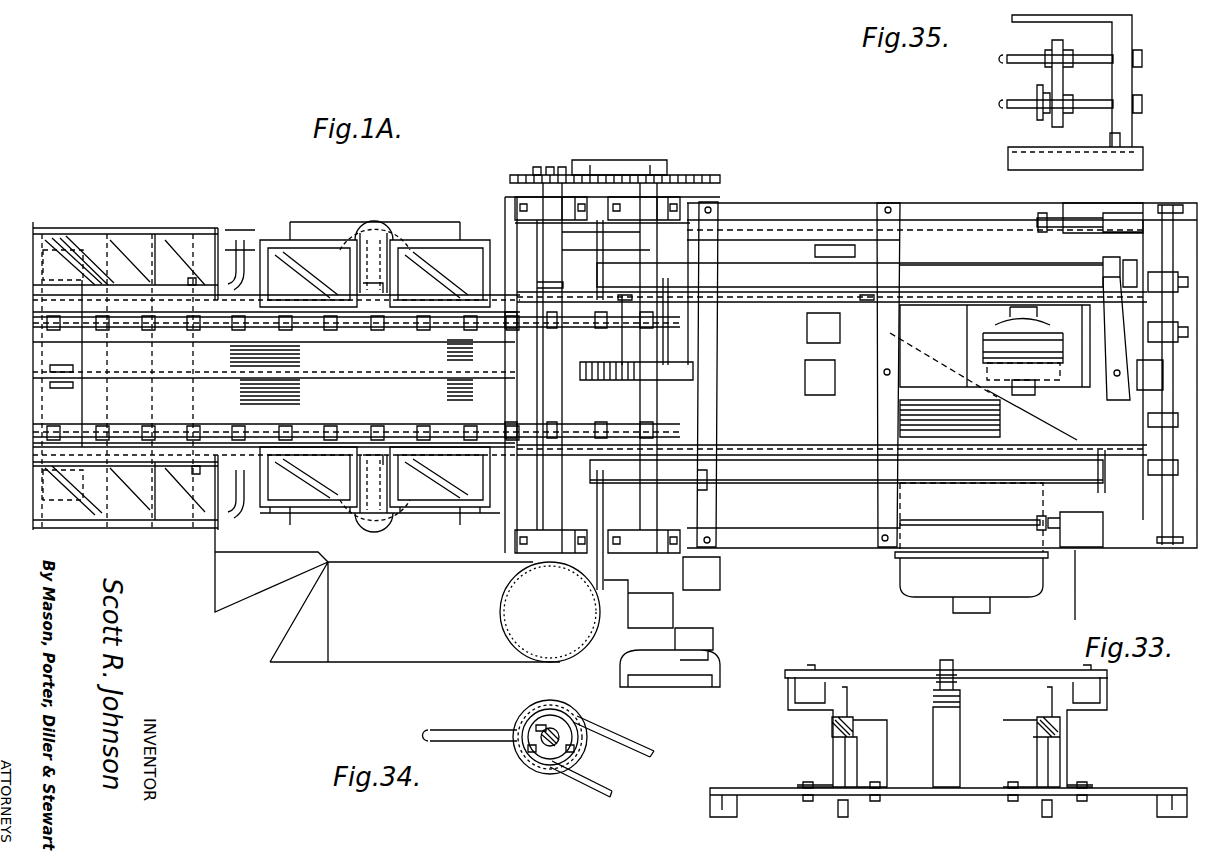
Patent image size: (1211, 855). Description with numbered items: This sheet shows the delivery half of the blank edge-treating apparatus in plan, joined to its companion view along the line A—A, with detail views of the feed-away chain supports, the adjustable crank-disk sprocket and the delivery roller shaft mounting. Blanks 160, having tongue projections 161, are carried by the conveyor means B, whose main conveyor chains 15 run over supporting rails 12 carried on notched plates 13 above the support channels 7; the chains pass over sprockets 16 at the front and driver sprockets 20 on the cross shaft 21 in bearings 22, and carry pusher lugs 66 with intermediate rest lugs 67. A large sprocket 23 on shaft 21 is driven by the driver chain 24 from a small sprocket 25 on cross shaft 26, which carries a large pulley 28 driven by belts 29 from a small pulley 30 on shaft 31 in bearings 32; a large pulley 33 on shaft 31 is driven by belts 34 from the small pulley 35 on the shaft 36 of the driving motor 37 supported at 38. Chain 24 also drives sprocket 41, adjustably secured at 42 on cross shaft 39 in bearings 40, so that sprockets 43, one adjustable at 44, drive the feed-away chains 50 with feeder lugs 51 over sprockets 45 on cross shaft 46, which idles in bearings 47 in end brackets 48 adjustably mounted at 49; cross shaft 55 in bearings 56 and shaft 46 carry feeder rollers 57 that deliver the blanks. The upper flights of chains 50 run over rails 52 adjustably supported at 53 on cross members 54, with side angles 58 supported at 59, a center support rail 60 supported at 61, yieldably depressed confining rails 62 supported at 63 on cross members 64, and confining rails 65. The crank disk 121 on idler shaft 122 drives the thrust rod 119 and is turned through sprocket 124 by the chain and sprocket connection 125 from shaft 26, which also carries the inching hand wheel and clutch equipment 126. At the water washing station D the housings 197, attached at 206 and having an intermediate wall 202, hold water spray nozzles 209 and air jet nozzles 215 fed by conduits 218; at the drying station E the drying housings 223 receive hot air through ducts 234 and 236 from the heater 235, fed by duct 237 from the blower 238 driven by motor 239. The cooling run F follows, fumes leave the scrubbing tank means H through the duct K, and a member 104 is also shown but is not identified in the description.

In FIG. 1A, the dot and dash line A—A / stack supply A is at (31, 377).
In FIG. 1A, the water spray nozzles 209 is at (105, 252).
In FIG. 1A, the water washing station D is at (135, 226).
In FIG. 1A, the intermediate wall 202 is at (102, 260).
In FIG. 1A, the air jet nozzles 215 is at (192, 282).
In FIG. 1A, the housing 197 is at (213, 240).
In FIG. 1A, the supply conduits 218 is at (245, 268).
In FIG. 1A, the drying housing 223 is at (275, 238).
In FIG. 1A, the hot drying station E is at (325, 222).
In FIG. 1A, the duct 236 is at (355, 235).
In FIG. 1A, the heater 235 is at (405, 228).
In FIG. 1A, the duct 234 is at (380, 240).
In FIG. 1A, the supporting rails 12 is at (62, 334).
In FIG. 1A, the sprockets 16 is at (95, 338).
In FIG. 1A, the blank holding and conveying lugs 66 is at (125, 335).
In FIG. 1A, the support channels 7 is at (175, 335).
In FIG. 1A, the notched plates 13 is at (230, 342).
In FIG. 1A, the rail 104 is at (120, 418).
In FIG. 1A, the main conveyor chains 15 is at (205, 420).
In FIG. 1A, the scrubbing tank means H is at (320, 352).
In FIG. 1A, the thrust rod 119 is at (385, 390).
In FIG. 34, the thrust rod 119 is at (465, 730).
In FIG. 1A, the rest lug 67 is at (425, 425).
In FIG. 1A, the crank disk 121 is at (505, 392).
In FIG. 34, the crank disk 121 is at (530, 712).
In FIG. 1A, the can body blanks 160 is at (100, 500).
In FIG. 1A, the tongue projections 161 is at (125, 520).
In FIG. 1A, the attachment 206 is at (200, 500).
In FIG. 1A, the duct K is at (385, 648).
In FIG. 1A, the bearings 40 is at (520, 197).
In FIG. 1A, the cross shaft 39 is at (520, 240).
In FIG. 1A, the adjustable securing means 42 is at (535, 170).
In FIG. 1A, the sprocket 41 is at (560, 172).
In FIG. 1A, the driver chain 24 is at (612, 160).
In FIG. 1A, the large sprocket 23 is at (650, 175).
In FIG. 1A, the bearings 22 is at (655, 200).
In FIG. 1A, the small sprocket 25 is at (700, 195).
In FIG. 1A, the frame cross members 54 is at (718, 215).
In FIG. 33, the frame cross members 54 is at (752, 788).
In FIG. 1A, the large pulley 28 is at (760, 245).
In FIG. 1A, the duct 237 is at (795, 240).
In FIG. 1A, the shaft 31 is at (838, 240).
In FIG. 1A, the confining rail 65 is at (885, 203).
In FIG. 33, the confining rail 65 is at (830, 677).
In FIG. 1A, the cross shaft 26 is at (735, 240).
In FIG. 1A, the belts 29 is at (808, 258).
In FIG. 1A, the small pulley 30 is at (855, 257).
In FIG. 1A, the cross members 64 is at (895, 260).
In FIG. 33, the cross members 64 is at (1015, 670).
In FIG. 1A, the side angles 58 is at (955, 262).
In FIG. 33, the side angles 58 is at (790, 700).
In FIG. 1A, the blower 238 is at (1035, 258).
In FIG. 1A, the feeder rollers 57 is at (1150, 275).
In FIG. 35, the feeder rollers 57 is at (1058, 94).
In FIG. 1A, the feeder lugs 51 is at (958, 298).
In FIG. 33, the feeder lugs 51 is at (848, 687).
In FIG. 1A, the rails 52 is at (1000, 298).
In FIG. 33, the rails 52 is at (832, 735).
In FIG. 1A, the feed-away chains 50 is at (1030, 298).
In FIG. 35, the feed-away chains 50 is at (1038, 120).
In FIG. 33, the feed-away chains 50 is at (850, 710).
In FIG. 1A, the driver sprockets 20 is at (640, 285).
In FIG. 1A, the conveyor means B is at (760, 305).
In FIG. 1A, the bearings 32 is at (780, 374).
In FIG. 1A, the cooling run F is at (935, 342).
In FIG. 1A, the yieldable support 63 is at (892, 372).
In FIG. 33, the yieldable support 63 is at (952, 665).
In FIG. 1A, the sprockets 45 is at (1150, 305).
In FIG. 35, the sprockets 45 is at (1032, 115).
In FIG. 1A, the motor 239 is at (1019, 350).
In FIG. 1A, the cross shaft 21 is at (650, 340).
In FIG. 1A, the adjustment 44 is at (575, 325).
In FIG. 1A, the sprockets 43 is at (515, 330).
In FIG. 1A, the idler shaft 122 is at (550, 400).
In FIG. 34, the idler shaft 122 is at (540, 737).
In FIG. 1A, the confining rails 62 is at (740, 388).
In FIG. 33, the confining rails 62 is at (940, 690).
In FIG. 1A, the small pulley 35 is at (945, 400).
In FIG. 1A, the shaft 36 is at (1010, 398).
In FIG. 1A, the cross shaft 55 is at (1160, 395).
In FIG. 35, the cross shaft 55 is at (1020, 55).
In FIG. 1A, the support 59 is at (795, 470).
In FIG. 33, the support 59 is at (810, 712).
In FIG. 1A, the belts 34 is at (812, 460).
In FIG. 1A, the large pulley 33 is at (822, 470).
In FIG. 1A, the sprocket 124 is at (515, 505).
In FIG. 34, the sprocket 124 is at (580, 785).
In FIG. 1A, the chain and sprocket connection 125 is at (560, 570).
In FIG. 34, the chain and sprocket connection 125 is at (630, 748).
In FIG. 1A, the inching hand wheel and clutch equipment 126 is at (680, 687).
In FIG. 1A, the driving motor 37 is at (964, 575).
In FIG. 1A, the support 38 is at (1055, 583).
In FIG. 1A, the adjustable mounting 49 is at (1070, 210).
In FIG. 35, the adjustable mounting 49 is at (1112, 138).
In FIG. 1A, the end brackets 48 is at (1140, 215).
In FIG. 35, the end brackets 48 is at (1125, 45).
In FIG. 1A, the bearings 56 is at (1165, 220).
In FIG. 35, the bearings 56 is at (1108, 50).
In FIG. 35, the cross shaft 46 is at (1012, 100).
In FIG. 35, the bearings 47 is at (1112, 88).
In FIG. 33, the center support rail 60 is at (933, 700).
In FIG. 33, the support 61 is at (933, 736).
In FIG. 33, the adjustable support 53 is at (808, 782).